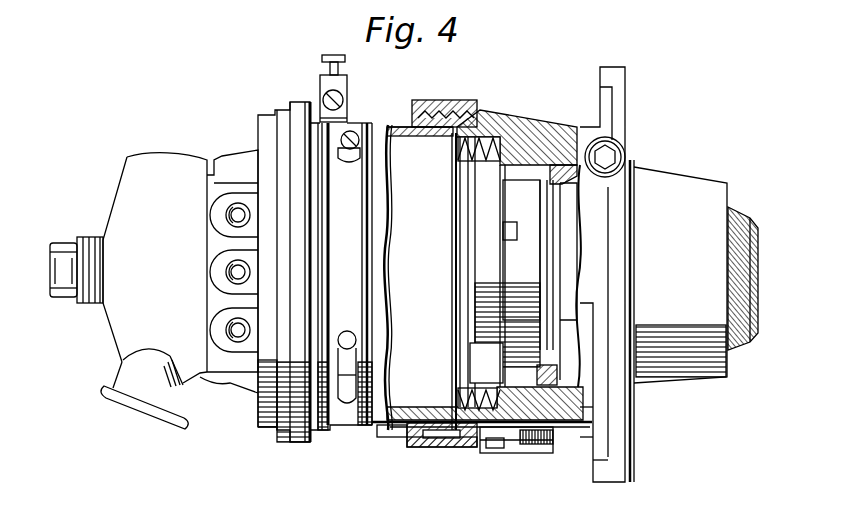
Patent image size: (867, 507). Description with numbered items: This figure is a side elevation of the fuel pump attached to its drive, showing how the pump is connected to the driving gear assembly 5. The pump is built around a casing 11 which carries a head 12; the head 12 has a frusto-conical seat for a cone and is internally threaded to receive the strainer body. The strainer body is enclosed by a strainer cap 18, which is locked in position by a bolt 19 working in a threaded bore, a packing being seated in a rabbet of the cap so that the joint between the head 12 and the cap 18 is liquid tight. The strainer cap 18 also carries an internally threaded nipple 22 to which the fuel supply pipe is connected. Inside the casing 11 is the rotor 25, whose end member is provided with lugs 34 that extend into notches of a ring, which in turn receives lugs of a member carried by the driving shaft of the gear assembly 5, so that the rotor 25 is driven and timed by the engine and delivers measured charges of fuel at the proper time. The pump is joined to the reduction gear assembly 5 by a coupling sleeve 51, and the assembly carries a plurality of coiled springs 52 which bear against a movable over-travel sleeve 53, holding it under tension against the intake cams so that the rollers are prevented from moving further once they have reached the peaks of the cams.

The driving gear assembly 5 is at (678, 321).
The casing 11 is at (402, 127).
The head 12 is at (237, 372).
The strainer cap 18 is at (155, 262).
The bolt 19 is at (60, 252).
The internally threaded nipple 22 is at (128, 377).
The rotor 25 is at (487, 273).
The lugs 34 is at (503, 232).
The coupling sleeve 51 is at (440, 432).
The coiled springs 52 is at (500, 128).
The movable over-travel sleeve 53 is at (420, 277).